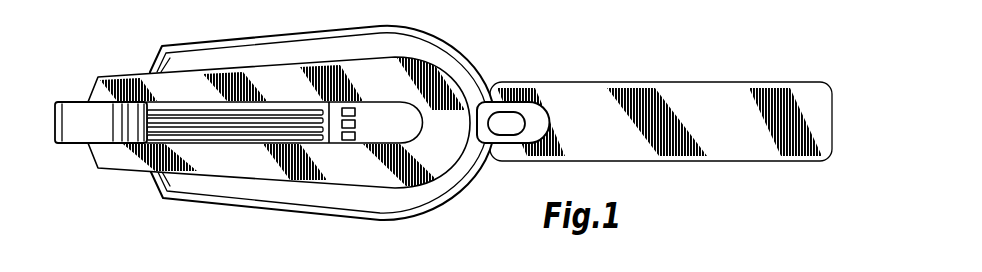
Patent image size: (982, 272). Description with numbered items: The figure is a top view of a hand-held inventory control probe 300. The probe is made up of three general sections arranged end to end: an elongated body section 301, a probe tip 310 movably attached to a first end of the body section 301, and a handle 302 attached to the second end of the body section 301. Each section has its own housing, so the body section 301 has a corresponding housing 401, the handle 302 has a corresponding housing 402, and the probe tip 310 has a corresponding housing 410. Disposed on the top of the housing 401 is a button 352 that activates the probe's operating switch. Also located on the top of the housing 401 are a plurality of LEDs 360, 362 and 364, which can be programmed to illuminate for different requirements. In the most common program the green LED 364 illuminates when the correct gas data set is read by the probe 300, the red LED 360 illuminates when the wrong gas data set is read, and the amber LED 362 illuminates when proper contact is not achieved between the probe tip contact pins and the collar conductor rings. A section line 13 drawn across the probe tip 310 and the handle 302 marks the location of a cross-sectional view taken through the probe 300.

The section line 13 is at (49, 123).
The inventory control probe 300 is at (443, 110).
The body section 301 is at (306, 30).
The handle 302 is at (661, 101).
The probe tip 310 is at (101, 83).
The button 352 is at (507, 110).
The red LED 360 is at (348, 140).
The amber LED 362 is at (355, 124).
The green LED 364 is at (355, 113).
The housing 401 is at (388, 84).
The housing 402 is at (726, 132).
The housing 410 is at (108, 133).